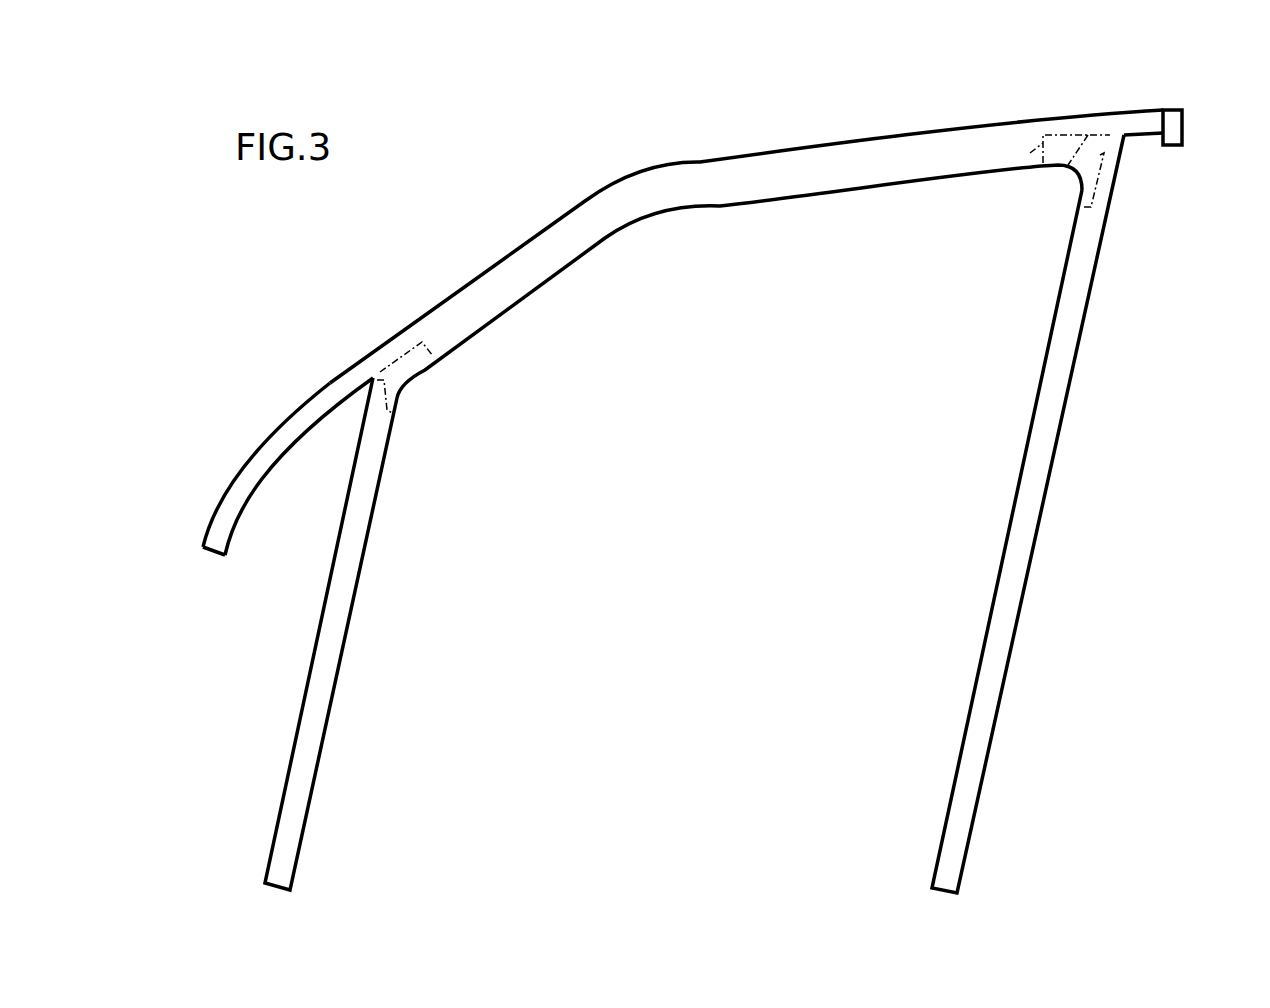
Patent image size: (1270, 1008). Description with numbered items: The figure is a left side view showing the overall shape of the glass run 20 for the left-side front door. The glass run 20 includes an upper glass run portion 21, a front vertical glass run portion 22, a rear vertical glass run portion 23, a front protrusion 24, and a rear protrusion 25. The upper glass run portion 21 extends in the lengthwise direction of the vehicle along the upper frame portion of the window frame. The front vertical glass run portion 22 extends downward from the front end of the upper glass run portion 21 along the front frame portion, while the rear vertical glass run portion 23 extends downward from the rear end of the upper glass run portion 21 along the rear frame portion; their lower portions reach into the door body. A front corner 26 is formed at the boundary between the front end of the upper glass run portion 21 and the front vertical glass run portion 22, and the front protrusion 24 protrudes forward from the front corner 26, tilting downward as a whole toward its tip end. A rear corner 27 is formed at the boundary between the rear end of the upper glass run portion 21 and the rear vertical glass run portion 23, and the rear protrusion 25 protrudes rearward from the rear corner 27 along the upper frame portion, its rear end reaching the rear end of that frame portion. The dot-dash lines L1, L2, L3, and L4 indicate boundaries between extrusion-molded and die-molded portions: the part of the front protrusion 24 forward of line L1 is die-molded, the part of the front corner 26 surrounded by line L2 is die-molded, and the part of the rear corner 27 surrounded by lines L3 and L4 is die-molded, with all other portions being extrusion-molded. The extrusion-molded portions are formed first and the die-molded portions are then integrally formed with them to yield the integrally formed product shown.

The glass run for left-side front door 20 is at (750, 125).
The upper glass run portion 21 is at (935, 125).
The front vertical glass run portion 22 is at (305, 745).
The rear vertical glass run portion 23 is at (1007, 613).
The front protrusion 24 is at (237, 463).
The rear protrusion 25 is at (1173, 107).
The front corner 26 is at (383, 353).
The rear corner 27 is at (1065, 140).
The dot-dash line L1 is at (230, 522).
The dot-dash line L2 is at (400, 398).
The dot-dash line L3 is at (1063, 170).
The dot-dash line L4 is at (1163, 122).